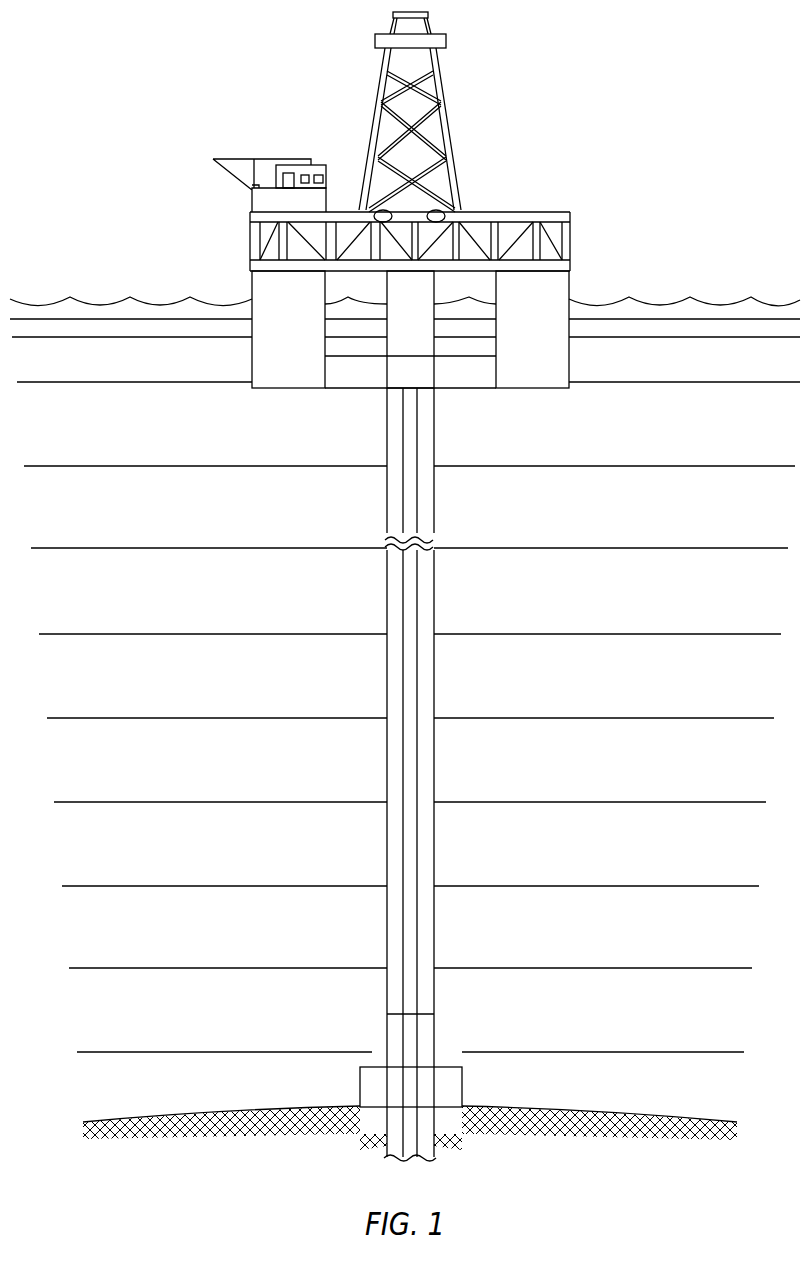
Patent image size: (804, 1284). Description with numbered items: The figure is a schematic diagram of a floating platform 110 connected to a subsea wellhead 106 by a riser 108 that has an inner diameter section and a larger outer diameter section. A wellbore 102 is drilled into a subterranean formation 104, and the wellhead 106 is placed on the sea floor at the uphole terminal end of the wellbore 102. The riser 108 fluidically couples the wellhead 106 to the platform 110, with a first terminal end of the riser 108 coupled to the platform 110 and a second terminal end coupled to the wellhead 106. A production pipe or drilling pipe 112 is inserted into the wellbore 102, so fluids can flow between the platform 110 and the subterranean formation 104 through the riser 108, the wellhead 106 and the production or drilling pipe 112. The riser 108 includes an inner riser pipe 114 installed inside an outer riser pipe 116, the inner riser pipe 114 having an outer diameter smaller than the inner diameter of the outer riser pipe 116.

The wellbore 102 is at (380, 1147).
The subterranean formation 104 is at (630, 1118).
The wellhead 106 is at (448, 1067).
The riser 108 is at (441, 582).
The platform 110 is at (557, 212).
The production pipe or drilling pipe 112 is at (418, 1140).
The inner riser pipe 114 is at (417, 473).
The outer riser pipe 116 is at (387, 482).